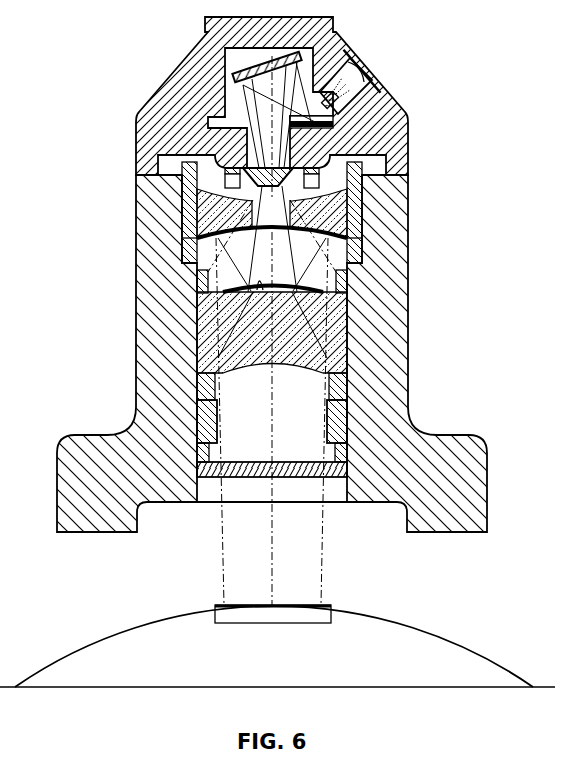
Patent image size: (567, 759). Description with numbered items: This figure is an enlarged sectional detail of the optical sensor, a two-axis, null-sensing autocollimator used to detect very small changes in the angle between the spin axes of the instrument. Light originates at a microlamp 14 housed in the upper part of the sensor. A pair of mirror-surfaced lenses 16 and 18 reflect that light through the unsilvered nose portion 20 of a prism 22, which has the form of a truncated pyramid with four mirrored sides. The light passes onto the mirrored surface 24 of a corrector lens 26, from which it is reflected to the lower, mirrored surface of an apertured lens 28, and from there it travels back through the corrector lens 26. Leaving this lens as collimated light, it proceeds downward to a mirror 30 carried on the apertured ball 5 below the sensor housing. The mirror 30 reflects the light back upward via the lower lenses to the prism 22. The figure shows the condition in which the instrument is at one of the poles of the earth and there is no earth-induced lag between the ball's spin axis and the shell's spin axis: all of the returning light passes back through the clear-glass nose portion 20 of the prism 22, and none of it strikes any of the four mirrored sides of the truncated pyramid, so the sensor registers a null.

The apertured ball 5 is at (369, 669).
The microlamp 14 is at (349, 58).
The mirror-surfaced lens 16 is at (312, 115).
The mirror-surfaced lens 18 is at (238, 84).
The unsilvered nose portion 20 is at (251, 210).
The prism 22 is at (249, 167).
The mirrored surface 24 is at (273, 304).
The corrector lens 26 is at (307, 345).
The apertured lens 28 is at (335, 223).
The mirror 30 is at (313, 600).